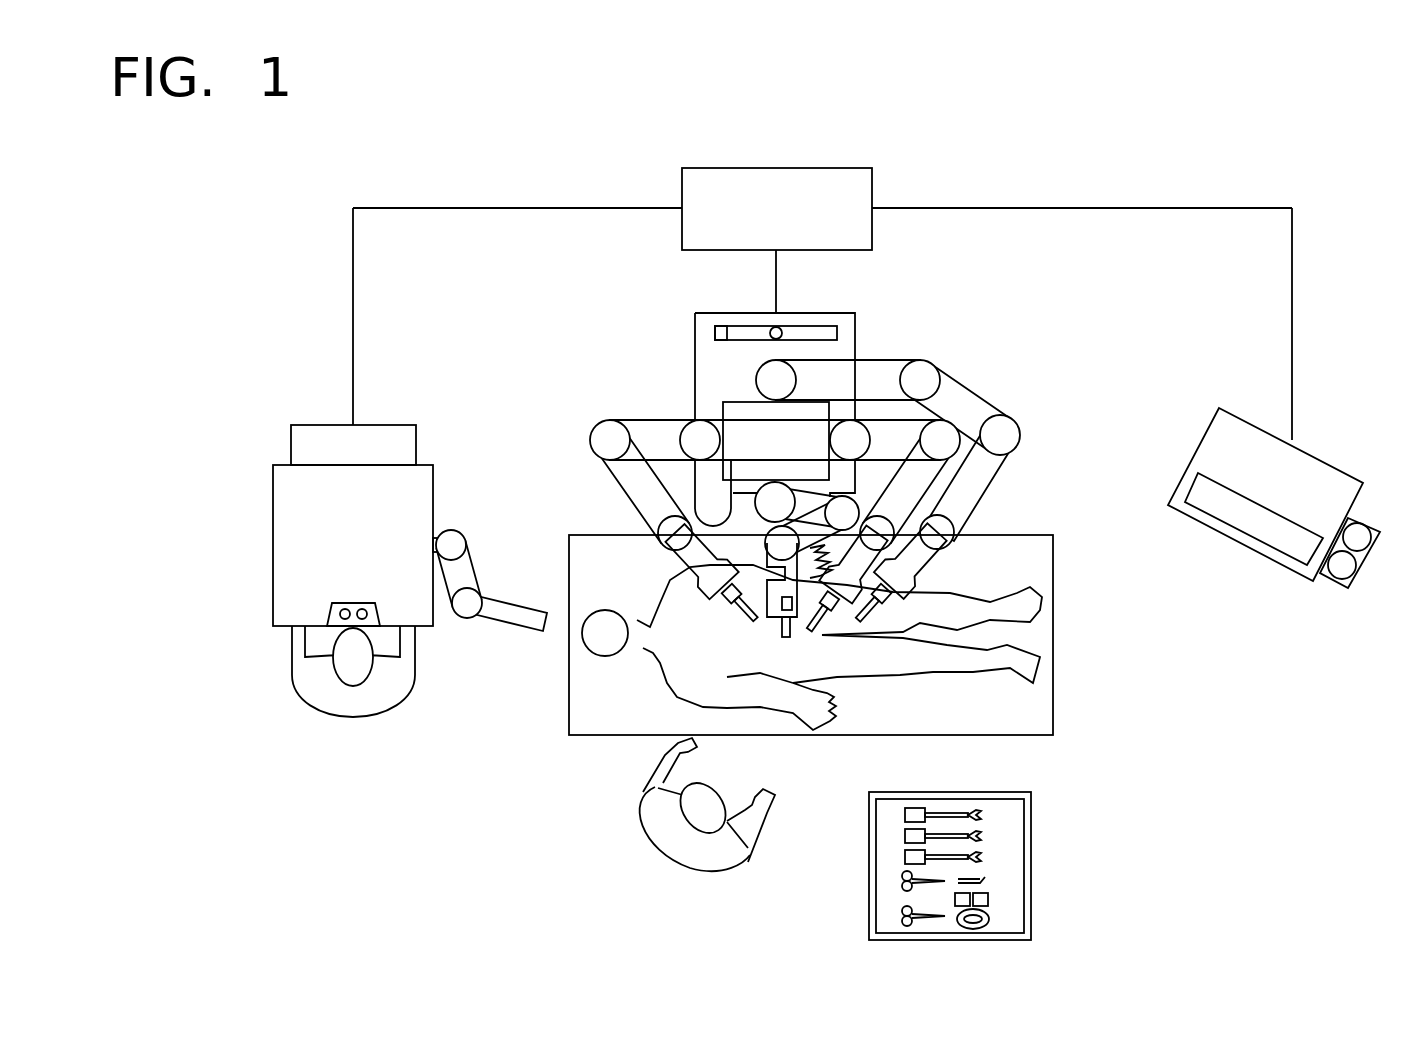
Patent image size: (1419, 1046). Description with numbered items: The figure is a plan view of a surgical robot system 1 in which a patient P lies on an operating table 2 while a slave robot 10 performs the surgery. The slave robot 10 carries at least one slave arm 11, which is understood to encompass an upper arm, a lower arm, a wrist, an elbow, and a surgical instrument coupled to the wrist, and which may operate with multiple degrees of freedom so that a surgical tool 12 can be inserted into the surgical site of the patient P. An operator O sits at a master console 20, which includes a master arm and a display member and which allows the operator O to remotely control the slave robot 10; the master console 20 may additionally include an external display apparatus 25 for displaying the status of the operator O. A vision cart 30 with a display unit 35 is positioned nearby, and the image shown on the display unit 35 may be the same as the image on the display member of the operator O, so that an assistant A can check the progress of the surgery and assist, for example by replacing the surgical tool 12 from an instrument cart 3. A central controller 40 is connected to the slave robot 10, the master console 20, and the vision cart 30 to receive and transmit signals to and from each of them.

The surgical robot system 1 is at (1174, 121).
The operating table 2 is at (568, 703).
The instrument cart 3 is at (1018, 920).
The slave robot 10 is at (683, 346).
The slave arm 11 is at (968, 408).
The surgical tool 12 is at (897, 587).
The master console 20 is at (252, 510).
The external display apparatus 25 is at (518, 607).
The vision cart 30 is at (1333, 428).
The display unit 35 is at (1247, 537).
The central controller 40 is at (778, 168).
The operator O is at (353, 700).
The patient P is at (878, 672).
The assistant A is at (681, 848).